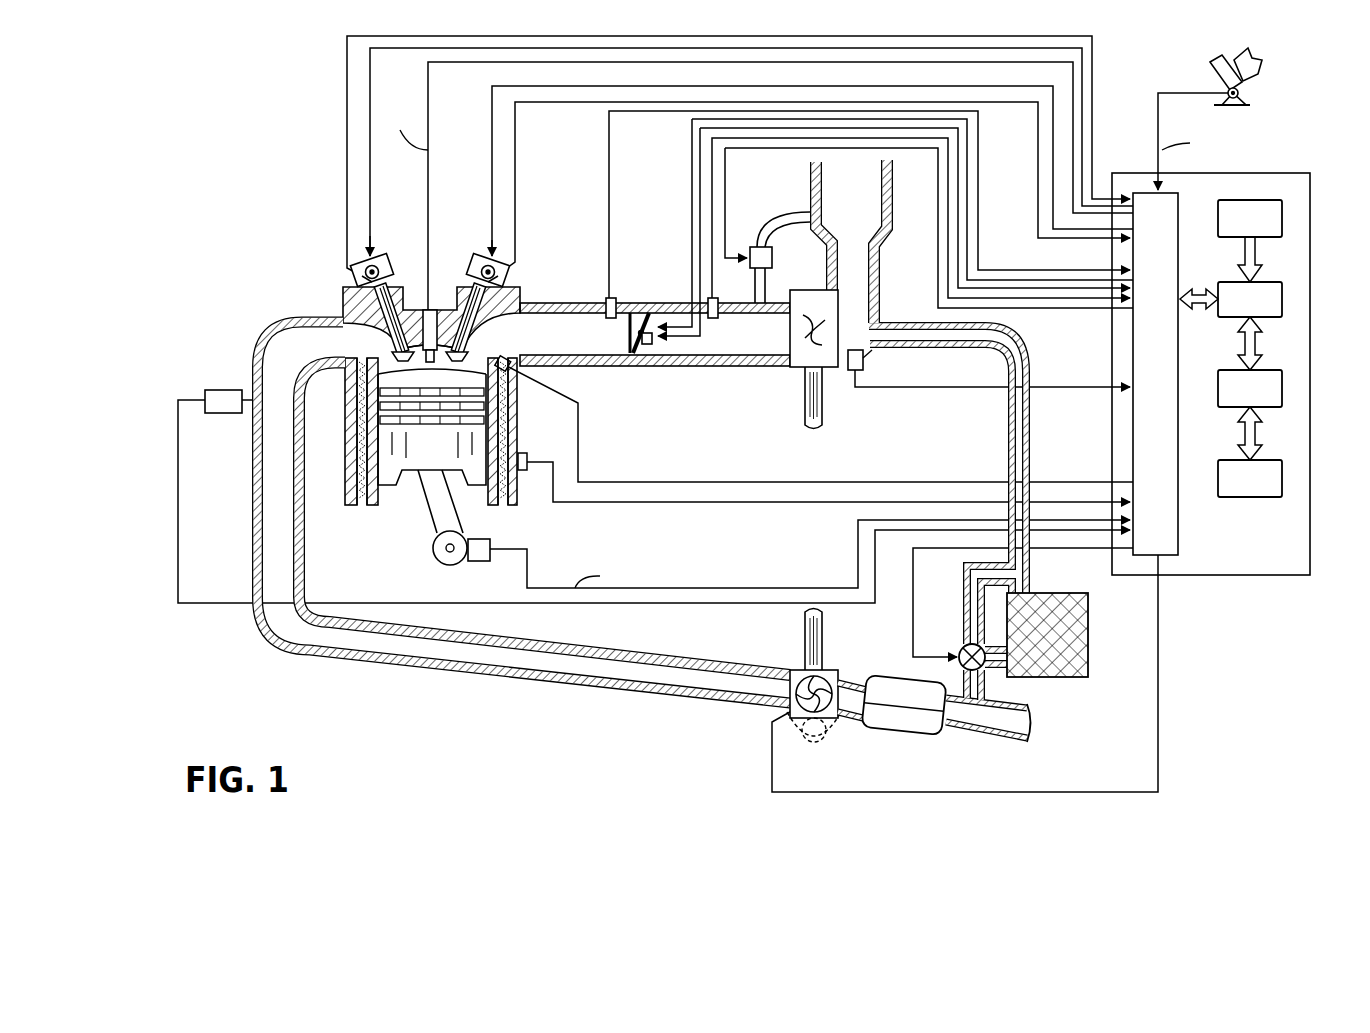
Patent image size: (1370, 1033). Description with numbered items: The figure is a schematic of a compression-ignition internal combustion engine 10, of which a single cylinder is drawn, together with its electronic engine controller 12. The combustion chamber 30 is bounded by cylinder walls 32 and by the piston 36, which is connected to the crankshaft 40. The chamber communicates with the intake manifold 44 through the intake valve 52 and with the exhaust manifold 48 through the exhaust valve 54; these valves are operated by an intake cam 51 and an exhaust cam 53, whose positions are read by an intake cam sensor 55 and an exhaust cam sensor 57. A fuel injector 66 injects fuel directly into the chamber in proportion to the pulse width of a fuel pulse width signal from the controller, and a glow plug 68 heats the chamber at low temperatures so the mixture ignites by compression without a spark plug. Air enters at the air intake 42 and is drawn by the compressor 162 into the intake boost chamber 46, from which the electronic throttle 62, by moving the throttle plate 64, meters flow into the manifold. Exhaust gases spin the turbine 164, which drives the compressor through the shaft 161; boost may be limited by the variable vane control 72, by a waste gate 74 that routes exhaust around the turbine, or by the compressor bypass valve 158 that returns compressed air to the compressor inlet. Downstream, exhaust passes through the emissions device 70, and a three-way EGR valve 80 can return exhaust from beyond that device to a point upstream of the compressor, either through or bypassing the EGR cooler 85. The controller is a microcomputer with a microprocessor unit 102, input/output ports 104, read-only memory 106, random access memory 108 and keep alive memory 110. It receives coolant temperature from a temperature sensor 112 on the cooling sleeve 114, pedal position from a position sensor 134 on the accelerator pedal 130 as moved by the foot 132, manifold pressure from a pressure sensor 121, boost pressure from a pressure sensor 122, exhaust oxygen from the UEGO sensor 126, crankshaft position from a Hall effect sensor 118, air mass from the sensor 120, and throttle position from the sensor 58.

The internal combustion engine 10 is at (290, 247).
The electronic engine controller 12 is at (1290, 173).
The combustion chamber 30 is at (432, 378).
The cylinder walls 32 is at (380, 500).
The piston 36 is at (418, 462).
The crankshaft 40 is at (443, 563).
The air intake 42 is at (851, 241).
The intake manifold 44 is at (655, 334).
The intake boost chamber 46 is at (871, 483).
The exhaust manifold 48 is at (524, 512).
The intake cam 51 is at (484, 262).
The intake valve 52 is at (470, 356).
The exhaust cam 53 is at (380, 262).
The exhaust valve 54 is at (393, 348).
The intake cam sensor 55 is at (503, 285).
The exhaust cam sensor 57 is at (358, 276).
The throttle position sensor 58 is at (650, 345).
The electronic throttle 62 is at (634, 312).
The throttle plate 64 is at (647, 312).
The fuel injector 66 is at (420, 312).
The glow plug 68 is at (566, 400).
The emissions device 70 is at (886, 728).
The variable vane control 72 is at (790, 712).
The waste gate 74 is at (822, 742).
The EGR valve 80 is at (963, 650).
The EGR cooler 85 is at (1088, 640).
The microprocessor unit 102 is at (1282, 293).
The input/output ports 104 is at (1180, 195).
The read-only memory 106 is at (1282, 212).
The random access memory 108 is at (1282, 383).
The keep alive memory 110 is at (1282, 470).
The temperature sensor 112 is at (523, 455).
The cooling sleeve 114 is at (512, 503).
The Hall effect sensor 118 is at (481, 563).
The air mass sensor 120 is at (860, 371).
The pressure sensor 121 is at (606, 301).
The pressure sensor 122 is at (730, 290).
The UEGO sensor 126 is at (205, 393).
The accelerator pedal 130 is at (1213, 75).
The foot 132 is at (1262, 62).
The position sensor 134 is at (1250, 98).
The compressor bypass valve 158 is at (754, 247).
The shaft 161 is at (805, 407).
The compressor 162 is at (790, 368).
The turbine 164 is at (796, 670).